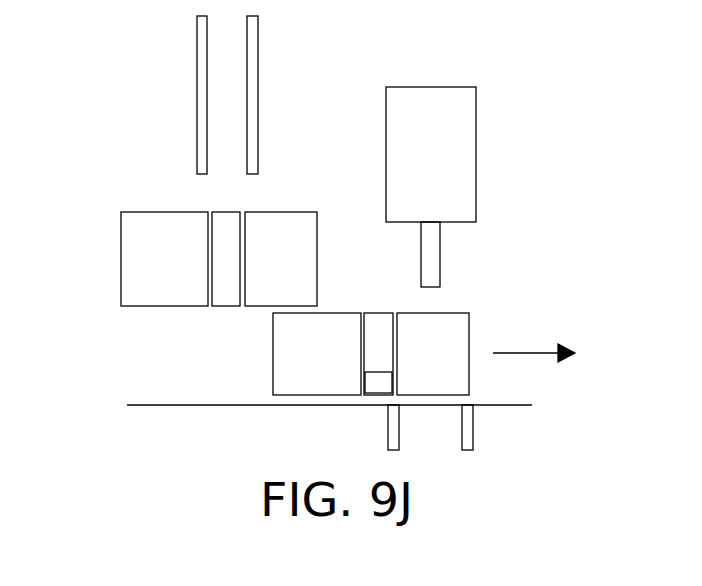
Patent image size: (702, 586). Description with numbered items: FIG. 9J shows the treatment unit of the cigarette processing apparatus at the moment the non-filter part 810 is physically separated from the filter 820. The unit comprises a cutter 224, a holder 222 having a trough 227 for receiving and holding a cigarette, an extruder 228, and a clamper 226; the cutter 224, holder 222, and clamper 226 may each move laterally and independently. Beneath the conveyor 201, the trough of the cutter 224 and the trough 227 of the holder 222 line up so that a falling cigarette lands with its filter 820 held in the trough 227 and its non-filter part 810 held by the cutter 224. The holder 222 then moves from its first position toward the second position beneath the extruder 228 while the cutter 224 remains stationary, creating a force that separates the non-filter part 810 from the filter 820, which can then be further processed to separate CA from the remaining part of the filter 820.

The conveyor 201 is at (201, 95).
The cutter 224 is at (133, 258).
The non-filter part 810 is at (224, 211).
The extruder 228 is at (462, 153).
The holder 222 is at (457, 326).
The filter 820 is at (376, 320).
The trough 227 is at (362, 386).
The clamper 226 is at (467, 427).